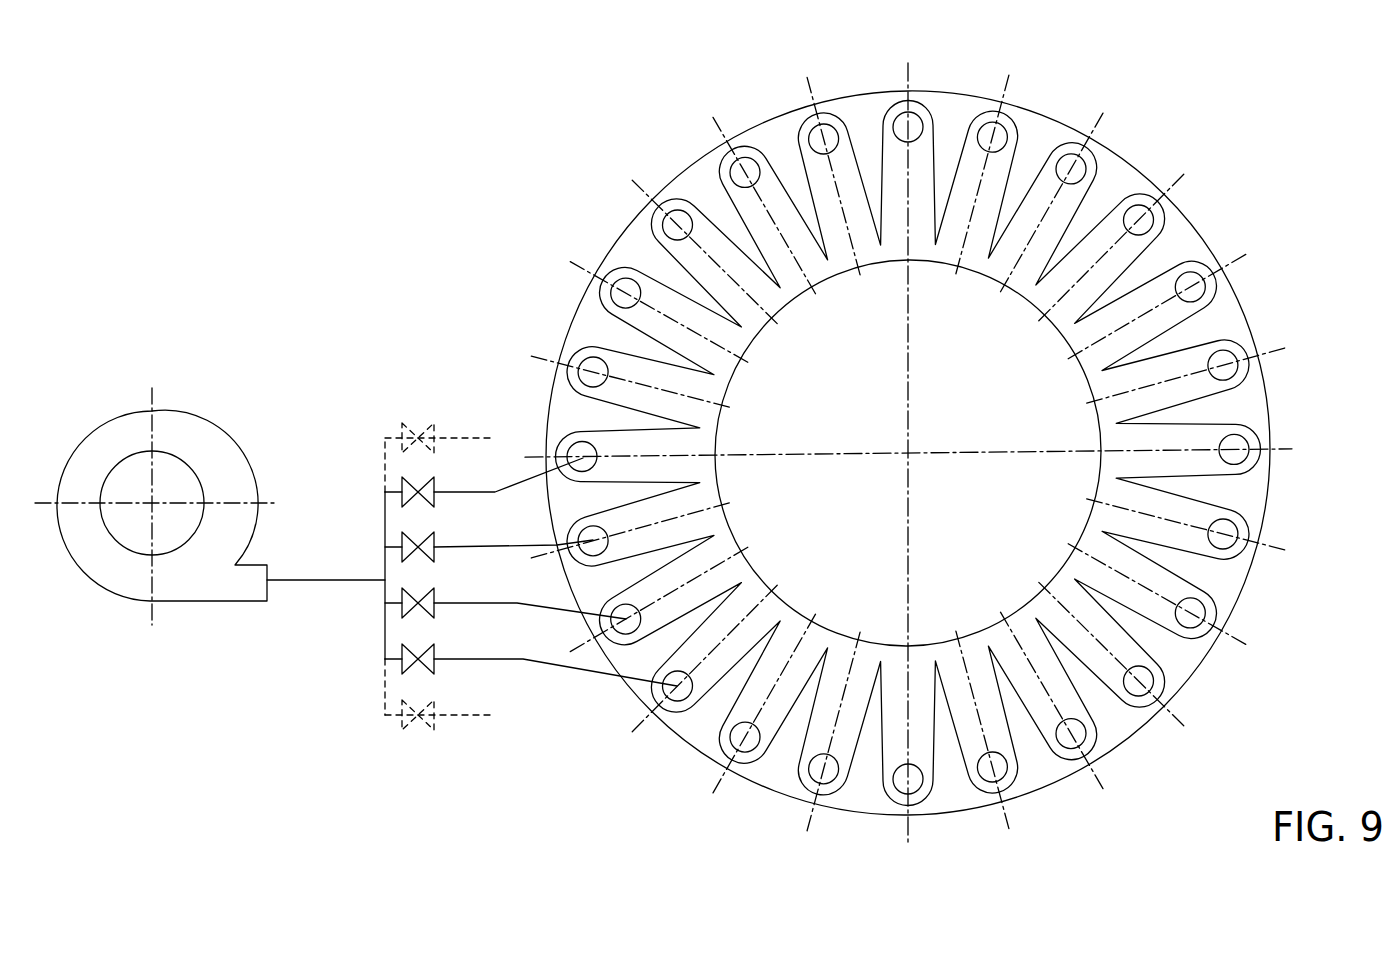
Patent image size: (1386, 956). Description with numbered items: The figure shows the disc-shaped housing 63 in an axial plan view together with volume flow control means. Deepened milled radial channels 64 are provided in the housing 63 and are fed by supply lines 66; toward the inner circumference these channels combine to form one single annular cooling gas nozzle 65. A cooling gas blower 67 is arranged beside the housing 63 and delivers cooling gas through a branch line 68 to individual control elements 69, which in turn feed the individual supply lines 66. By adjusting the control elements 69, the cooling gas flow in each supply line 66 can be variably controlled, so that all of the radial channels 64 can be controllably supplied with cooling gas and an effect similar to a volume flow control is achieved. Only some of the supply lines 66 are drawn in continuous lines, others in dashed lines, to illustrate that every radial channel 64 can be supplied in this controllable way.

The disc-shaped housing 63 is at (754, 129).
The radial channel 64 is at (842, 167).
The annular cooling gas nozzle 65 is at (918, 253).
The supply line 66 is at (992, 141).
The cooling gas blower 67 is at (188, 435).
The branch line 68 is at (385, 527).
The control element 69 is at (420, 490).